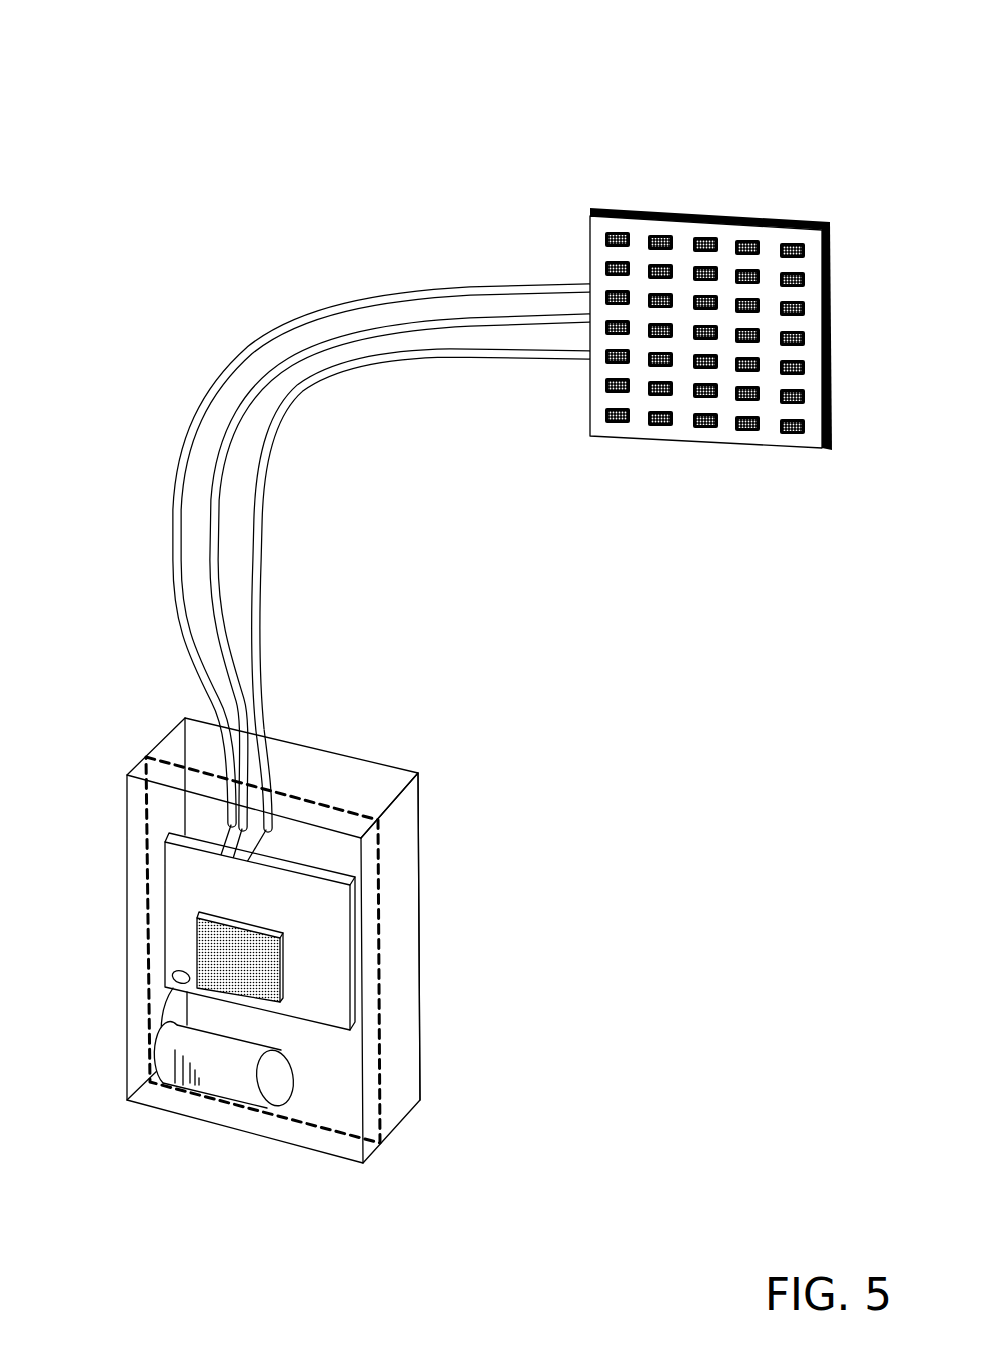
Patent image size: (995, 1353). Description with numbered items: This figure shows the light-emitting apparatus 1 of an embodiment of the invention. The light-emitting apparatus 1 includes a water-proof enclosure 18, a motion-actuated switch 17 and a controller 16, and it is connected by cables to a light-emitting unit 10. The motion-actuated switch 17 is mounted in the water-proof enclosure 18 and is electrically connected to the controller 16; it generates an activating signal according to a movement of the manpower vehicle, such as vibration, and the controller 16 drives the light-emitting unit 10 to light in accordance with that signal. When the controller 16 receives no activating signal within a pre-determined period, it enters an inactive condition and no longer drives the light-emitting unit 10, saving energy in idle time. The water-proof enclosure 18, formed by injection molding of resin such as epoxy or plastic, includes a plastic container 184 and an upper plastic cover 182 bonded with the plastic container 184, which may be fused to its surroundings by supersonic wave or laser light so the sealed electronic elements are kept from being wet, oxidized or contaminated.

The light-emitting apparatus 1 is at (184, 55).
The light-emitting unit 10 is at (594, 210).
The controller 16 is at (218, 952).
The motion-actuated switch 17 is at (238, 1073).
The water-proof enclosure 18 is at (186, 718).
The upper plastic cover 182 is at (378, 1143).
The plastic container 184 is at (393, 803).